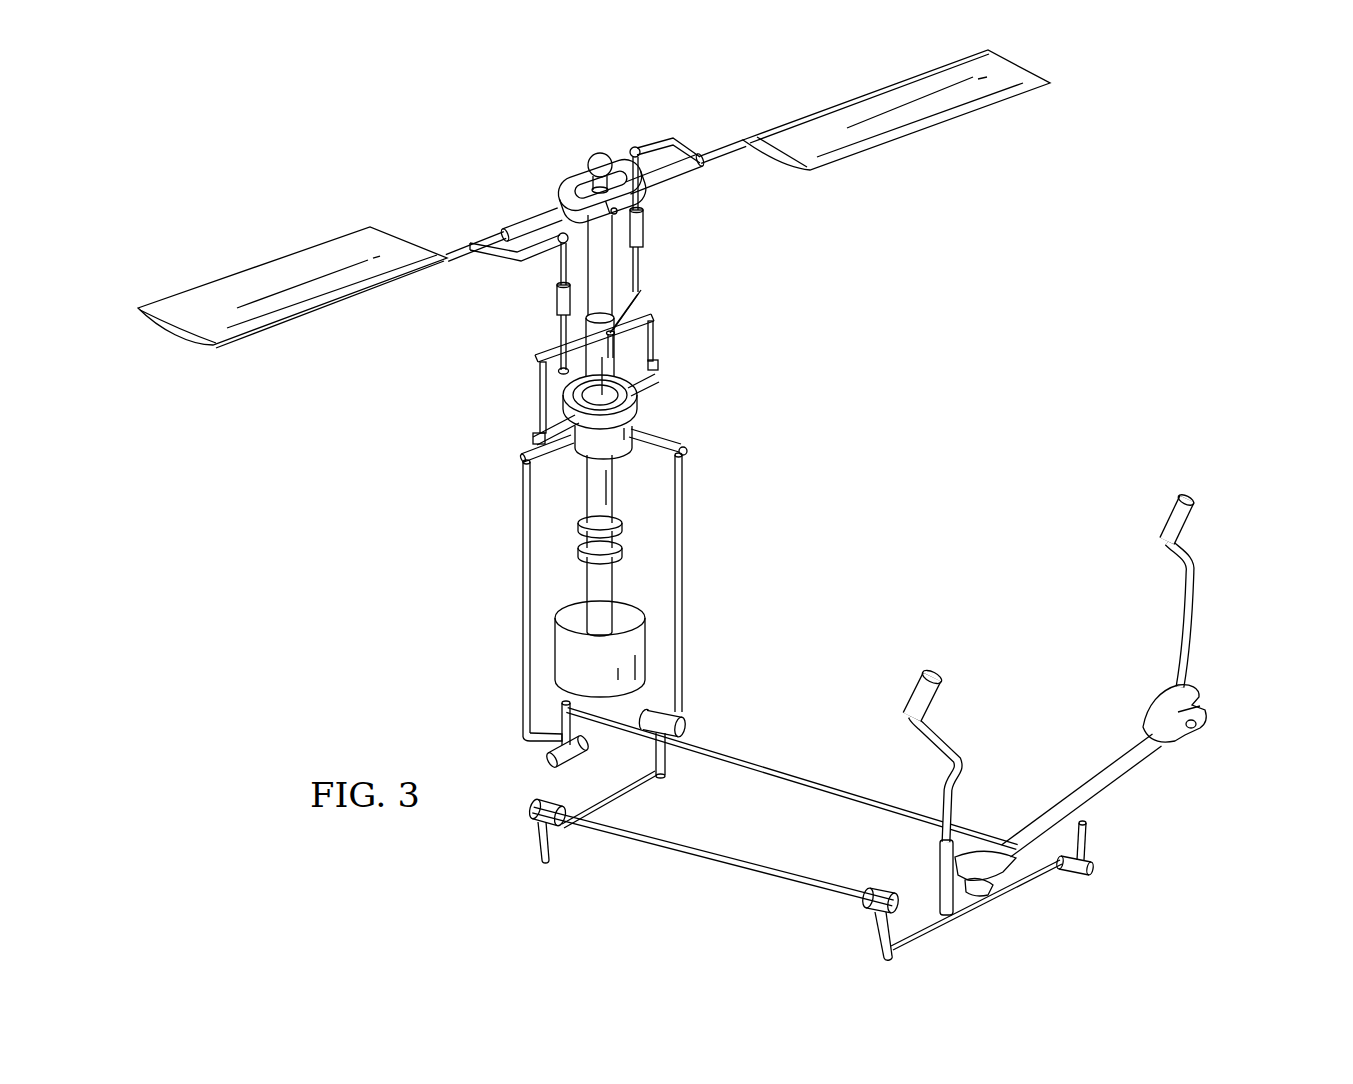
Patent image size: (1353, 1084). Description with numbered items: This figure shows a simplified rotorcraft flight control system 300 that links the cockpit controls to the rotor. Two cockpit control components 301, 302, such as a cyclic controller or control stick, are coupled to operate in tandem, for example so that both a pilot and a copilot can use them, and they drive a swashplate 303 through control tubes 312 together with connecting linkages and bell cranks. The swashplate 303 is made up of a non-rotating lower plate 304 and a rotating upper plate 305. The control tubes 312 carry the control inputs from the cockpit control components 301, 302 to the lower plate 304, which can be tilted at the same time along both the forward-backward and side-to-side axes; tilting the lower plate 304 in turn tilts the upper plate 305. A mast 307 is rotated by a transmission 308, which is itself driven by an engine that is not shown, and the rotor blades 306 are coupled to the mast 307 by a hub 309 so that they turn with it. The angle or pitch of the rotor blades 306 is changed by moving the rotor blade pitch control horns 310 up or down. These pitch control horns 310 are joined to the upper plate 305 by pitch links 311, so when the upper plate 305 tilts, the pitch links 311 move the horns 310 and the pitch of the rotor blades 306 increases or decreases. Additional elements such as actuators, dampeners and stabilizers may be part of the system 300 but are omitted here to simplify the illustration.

The rotorcraft flight control system 300 is at (1139, 229).
The cockpit control component 301 is at (1200, 575).
The cockpit control component 302 is at (965, 756).
The swashplate 303 is at (484, 419).
The non-rotating lower plate 304 is at (660, 441).
The rotating upper plate 305 is at (640, 402).
The rotor blades 306 is at (862, 89).
The mast 307 is at (615, 263).
The transmission 308 is at (648, 655).
The hub 309 is at (577, 181).
The rotor blade pitch control horns 310 is at (693, 135).
The pitch links 311 is at (645, 226).
The control tubes 312 is at (683, 590).